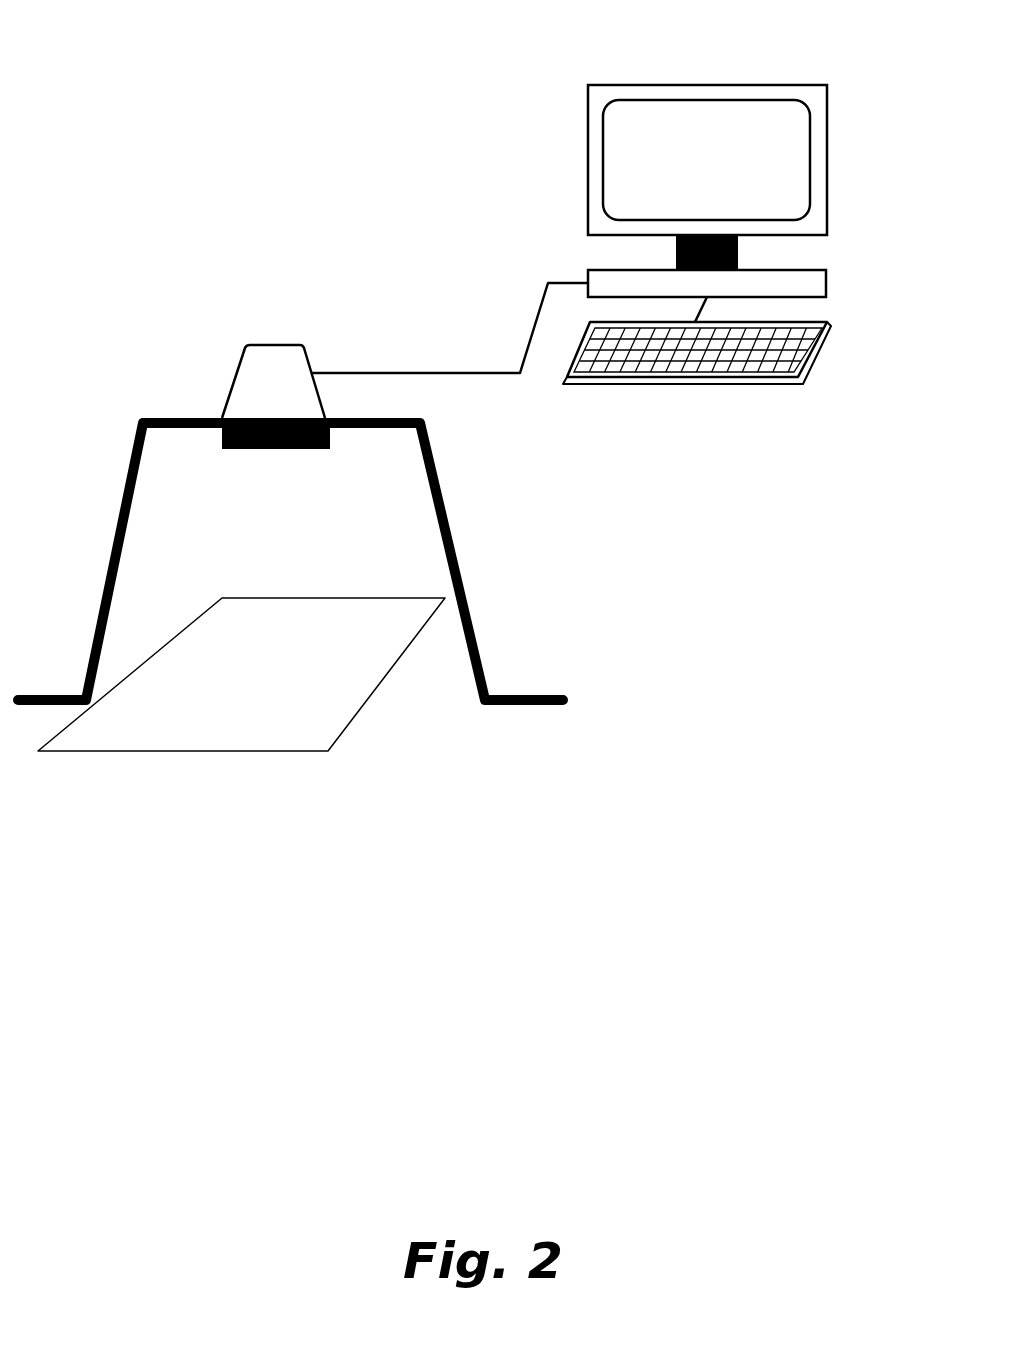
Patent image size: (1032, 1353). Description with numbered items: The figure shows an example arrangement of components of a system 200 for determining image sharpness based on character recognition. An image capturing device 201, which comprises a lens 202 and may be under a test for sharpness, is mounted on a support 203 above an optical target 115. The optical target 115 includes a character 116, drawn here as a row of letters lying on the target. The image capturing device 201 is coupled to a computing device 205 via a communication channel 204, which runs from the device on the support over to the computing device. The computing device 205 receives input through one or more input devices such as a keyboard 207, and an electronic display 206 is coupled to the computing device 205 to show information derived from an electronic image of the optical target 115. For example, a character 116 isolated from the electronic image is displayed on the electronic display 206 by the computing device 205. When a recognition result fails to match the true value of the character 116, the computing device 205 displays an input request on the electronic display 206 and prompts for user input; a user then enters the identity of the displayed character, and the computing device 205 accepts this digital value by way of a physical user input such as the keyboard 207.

The optical target 115 is at (267, 634).
The character 116 is at (348, 693).
The system 200 is at (498, 78).
The image capturing device 201 is at (283, 342).
The lens 202 is at (278, 450).
The support 203 is at (447, 513).
The communication channel 204 is at (403, 372).
The computing device 205 is at (825, 270).
The electronic display 206 is at (705, 83).
The keyboard 207 is at (825, 322).